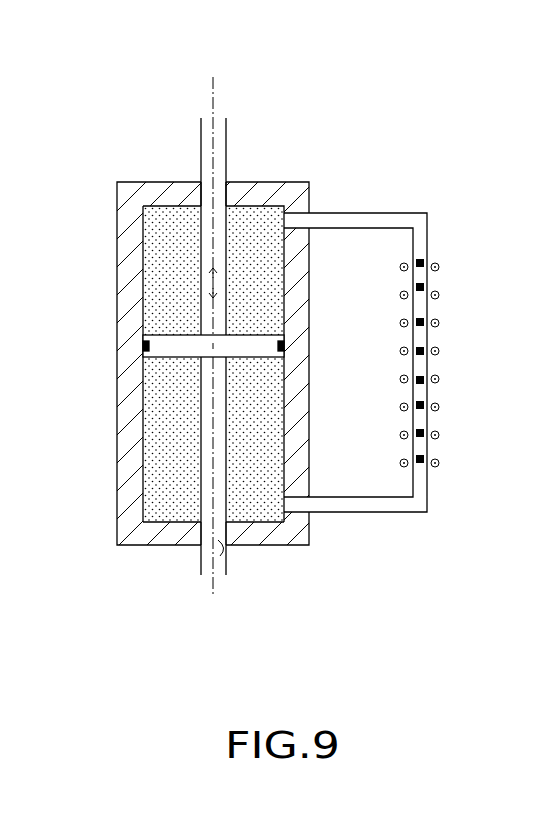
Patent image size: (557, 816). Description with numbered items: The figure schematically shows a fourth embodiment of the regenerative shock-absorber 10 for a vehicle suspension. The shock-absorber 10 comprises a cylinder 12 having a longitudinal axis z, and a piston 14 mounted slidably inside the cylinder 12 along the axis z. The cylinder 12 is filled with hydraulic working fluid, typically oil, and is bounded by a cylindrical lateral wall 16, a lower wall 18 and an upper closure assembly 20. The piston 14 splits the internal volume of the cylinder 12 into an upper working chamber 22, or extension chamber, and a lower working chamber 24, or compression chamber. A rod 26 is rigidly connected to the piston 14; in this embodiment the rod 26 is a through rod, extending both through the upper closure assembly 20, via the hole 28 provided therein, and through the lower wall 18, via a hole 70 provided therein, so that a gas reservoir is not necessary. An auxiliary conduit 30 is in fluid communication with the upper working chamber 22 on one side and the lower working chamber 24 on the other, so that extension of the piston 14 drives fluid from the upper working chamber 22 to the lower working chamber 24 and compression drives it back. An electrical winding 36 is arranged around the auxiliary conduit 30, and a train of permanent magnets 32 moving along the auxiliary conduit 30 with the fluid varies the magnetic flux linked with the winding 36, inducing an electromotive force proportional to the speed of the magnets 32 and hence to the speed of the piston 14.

The regenerative shock-absorber 10 is at (117, 178).
The cylinder 12 is at (117, 450).
The piston 14 is at (180, 335).
The cylindrical lateral wall 16 is at (122, 375).
The lower wall 18 is at (150, 545).
The upper closure assembly 20 is at (290, 182).
The upper working chamber 22 is at (167, 243).
The lower working chamber 24 is at (284, 430).
The rod 26 is at (200, 168).
The hole 28 is at (199, 178).
The auxiliary conduit 30 is at (373, 512).
The permanent magnets 32 is at (428, 307).
The electrical winding 36 is at (438, 460).
The hole 70 is at (218, 552).
The longitudinal axis z is at (214, 90).